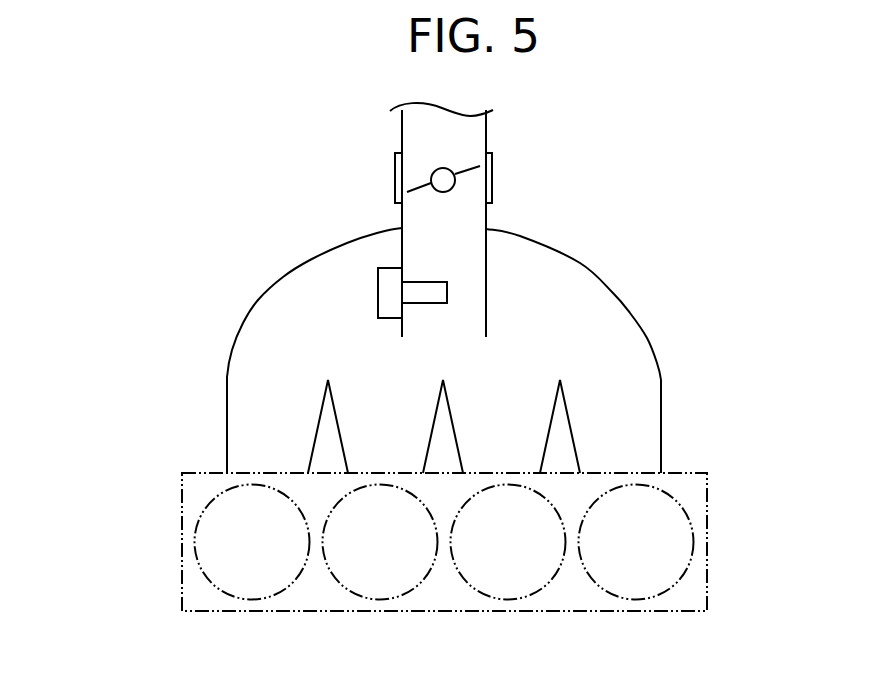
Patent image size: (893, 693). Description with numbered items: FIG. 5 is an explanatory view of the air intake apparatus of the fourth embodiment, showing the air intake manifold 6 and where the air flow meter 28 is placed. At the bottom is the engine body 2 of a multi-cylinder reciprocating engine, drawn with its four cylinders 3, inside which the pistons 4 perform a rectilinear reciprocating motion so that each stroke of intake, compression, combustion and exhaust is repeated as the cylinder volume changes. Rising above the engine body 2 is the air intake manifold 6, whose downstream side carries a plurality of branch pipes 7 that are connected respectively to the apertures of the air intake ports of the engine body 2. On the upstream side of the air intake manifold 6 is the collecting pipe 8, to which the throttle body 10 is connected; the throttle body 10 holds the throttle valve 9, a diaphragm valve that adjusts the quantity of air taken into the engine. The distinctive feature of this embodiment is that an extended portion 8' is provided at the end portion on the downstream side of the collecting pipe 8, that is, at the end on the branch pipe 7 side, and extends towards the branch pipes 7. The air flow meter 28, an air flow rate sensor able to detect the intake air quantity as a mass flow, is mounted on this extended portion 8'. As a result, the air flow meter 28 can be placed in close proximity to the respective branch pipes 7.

The engine body 2 is at (479, 576).
The cylinders 3 is at (471, 583).
The pistons 4 is at (640, 585).
The air intake manifold 6 is at (583, 259).
The branch pipes 7 is at (313, 427).
The collecting pipe 8 is at (479, 220).
The extended portion 8' is at (531, 285).
The throttle valve 9 is at (423, 178).
The throttle body 10 is at (505, 190).
The air flow meter 28 is at (378, 290).